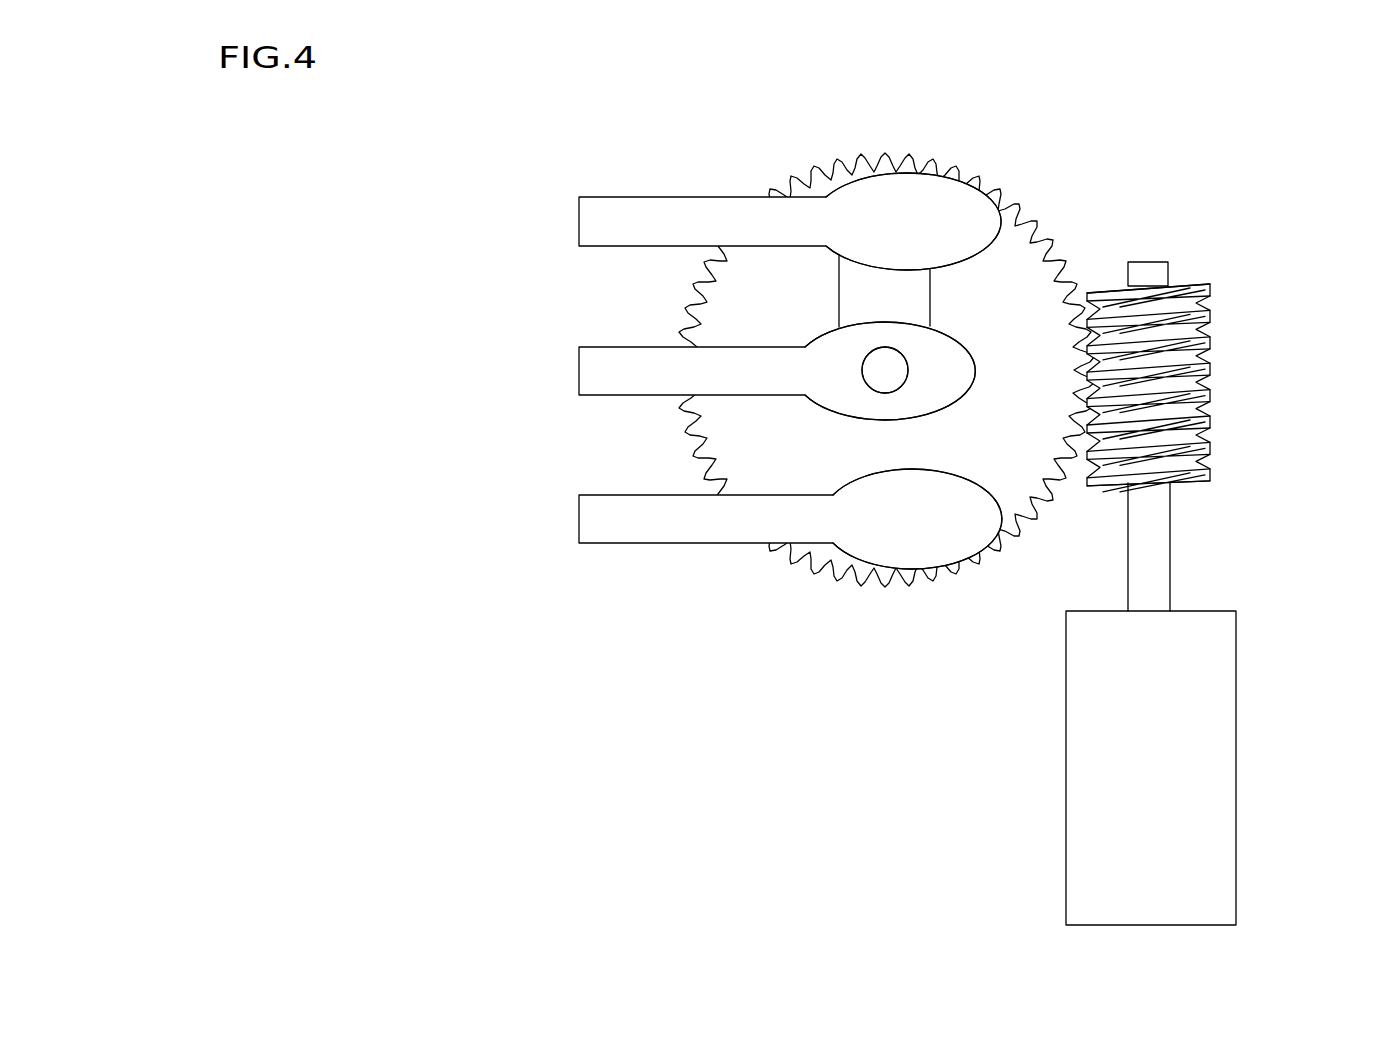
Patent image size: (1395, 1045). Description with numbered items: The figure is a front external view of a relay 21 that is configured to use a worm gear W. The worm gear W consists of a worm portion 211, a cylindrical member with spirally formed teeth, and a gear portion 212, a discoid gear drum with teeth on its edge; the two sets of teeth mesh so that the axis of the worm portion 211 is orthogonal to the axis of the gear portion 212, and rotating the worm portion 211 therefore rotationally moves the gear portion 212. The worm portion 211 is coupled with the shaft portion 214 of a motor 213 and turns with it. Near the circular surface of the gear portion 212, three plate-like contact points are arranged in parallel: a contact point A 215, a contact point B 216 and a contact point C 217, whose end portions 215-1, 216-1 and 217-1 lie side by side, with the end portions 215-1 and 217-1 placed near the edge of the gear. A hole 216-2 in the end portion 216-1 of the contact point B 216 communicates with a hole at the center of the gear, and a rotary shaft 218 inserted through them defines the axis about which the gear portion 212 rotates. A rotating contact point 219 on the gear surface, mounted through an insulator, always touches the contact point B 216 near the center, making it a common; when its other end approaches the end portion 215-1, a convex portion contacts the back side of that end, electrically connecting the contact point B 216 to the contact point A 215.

The relay 21 is at (625, 752).
The worm portion 211 is at (1207, 318).
The gear portion 212 is at (1040, 273).
The worm gear W is at (1196, 364).
The motor 213 is at (1187, 760).
The shaft portion 214 is at (1172, 545).
The contact point A 215 is at (579, 222).
The end portion of contact point A 215-1 is at (910, 218).
The contact point B 216 is at (579, 371).
The end portion of contact point B 216-1 is at (887, 407).
The hole 216-2 is at (870, 377).
The contact point C 217 is at (579, 519).
The end portion of contact point C 217-1 is at (915, 523).
The rotary shaft 218 is at (877, 360).
The rotating contact point 219 is at (920, 301).